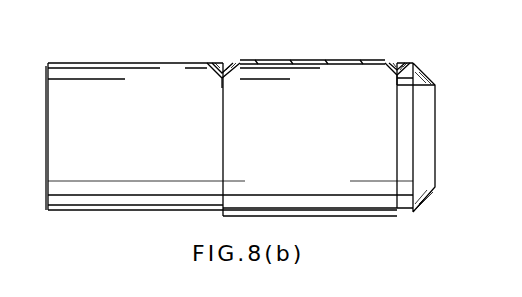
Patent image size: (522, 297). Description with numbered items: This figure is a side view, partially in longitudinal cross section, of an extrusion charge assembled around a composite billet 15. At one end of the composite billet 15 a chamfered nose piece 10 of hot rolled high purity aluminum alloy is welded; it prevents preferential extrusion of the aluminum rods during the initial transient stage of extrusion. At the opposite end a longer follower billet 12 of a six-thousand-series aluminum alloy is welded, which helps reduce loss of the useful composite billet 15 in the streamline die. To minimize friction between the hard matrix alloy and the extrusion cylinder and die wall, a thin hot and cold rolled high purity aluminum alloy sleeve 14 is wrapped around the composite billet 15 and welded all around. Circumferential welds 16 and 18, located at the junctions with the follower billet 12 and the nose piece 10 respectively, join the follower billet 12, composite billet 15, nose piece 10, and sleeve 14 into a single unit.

The chamfered nose piece 10 is at (436, 108).
The follower billet 12 is at (90, 62).
The aluminum alloy sleeve 14 is at (318, 60).
The composite billet 15 is at (318, 149).
The circumferential weld 16 is at (220, 62).
The circumferential weld 18 is at (388, 72).